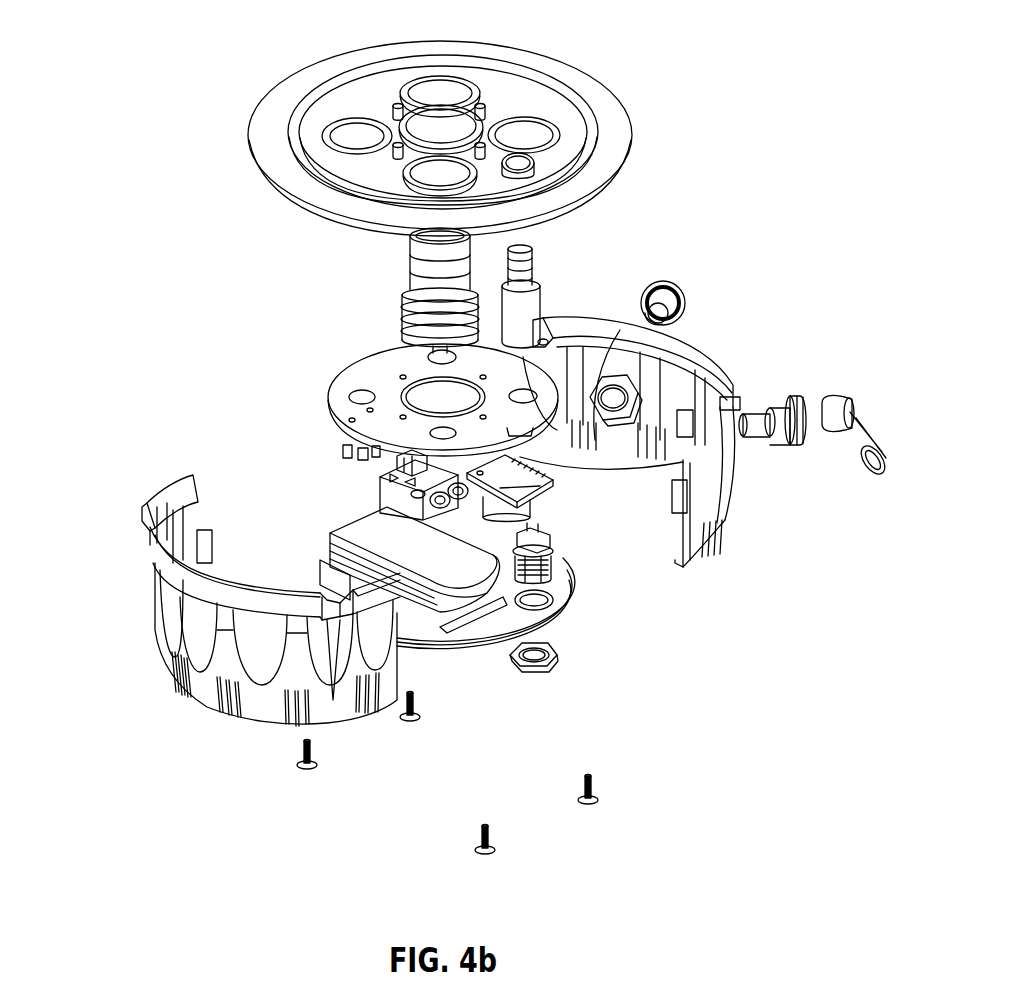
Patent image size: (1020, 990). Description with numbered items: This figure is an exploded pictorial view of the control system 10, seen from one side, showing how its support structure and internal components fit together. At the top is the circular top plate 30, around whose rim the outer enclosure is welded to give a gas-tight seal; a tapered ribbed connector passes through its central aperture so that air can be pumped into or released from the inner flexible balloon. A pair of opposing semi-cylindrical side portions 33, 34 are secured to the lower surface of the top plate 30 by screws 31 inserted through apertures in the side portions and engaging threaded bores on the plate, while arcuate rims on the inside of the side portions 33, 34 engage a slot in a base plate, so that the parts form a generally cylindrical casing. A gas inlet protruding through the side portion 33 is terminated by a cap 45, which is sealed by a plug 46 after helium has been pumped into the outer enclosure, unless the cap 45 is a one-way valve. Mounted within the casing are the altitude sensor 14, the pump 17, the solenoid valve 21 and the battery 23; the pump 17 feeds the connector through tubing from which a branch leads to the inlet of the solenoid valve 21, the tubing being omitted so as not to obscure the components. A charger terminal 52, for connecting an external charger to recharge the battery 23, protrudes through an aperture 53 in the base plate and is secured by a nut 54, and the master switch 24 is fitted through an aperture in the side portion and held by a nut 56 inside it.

The control system 10 is at (575, 840).
The altitude sensor 14 is at (520, 480).
The pump 17 is at (378, 476).
The solenoid valve 21 is at (345, 447).
The battery 23 is at (370, 522).
The master switch 24 is at (688, 297).
The top plate 30 is at (632, 126).
The screws 31 is at (447, 122).
The side portion 33 is at (720, 520).
The side portion 34 is at (160, 628).
The cap 45 is at (785, 440).
The plug 46 is at (829, 400).
The charger terminal 52 is at (545, 560).
The aperture 53 is at (537, 603).
The nut 54 is at (558, 660).
The nut 56 is at (613, 385).